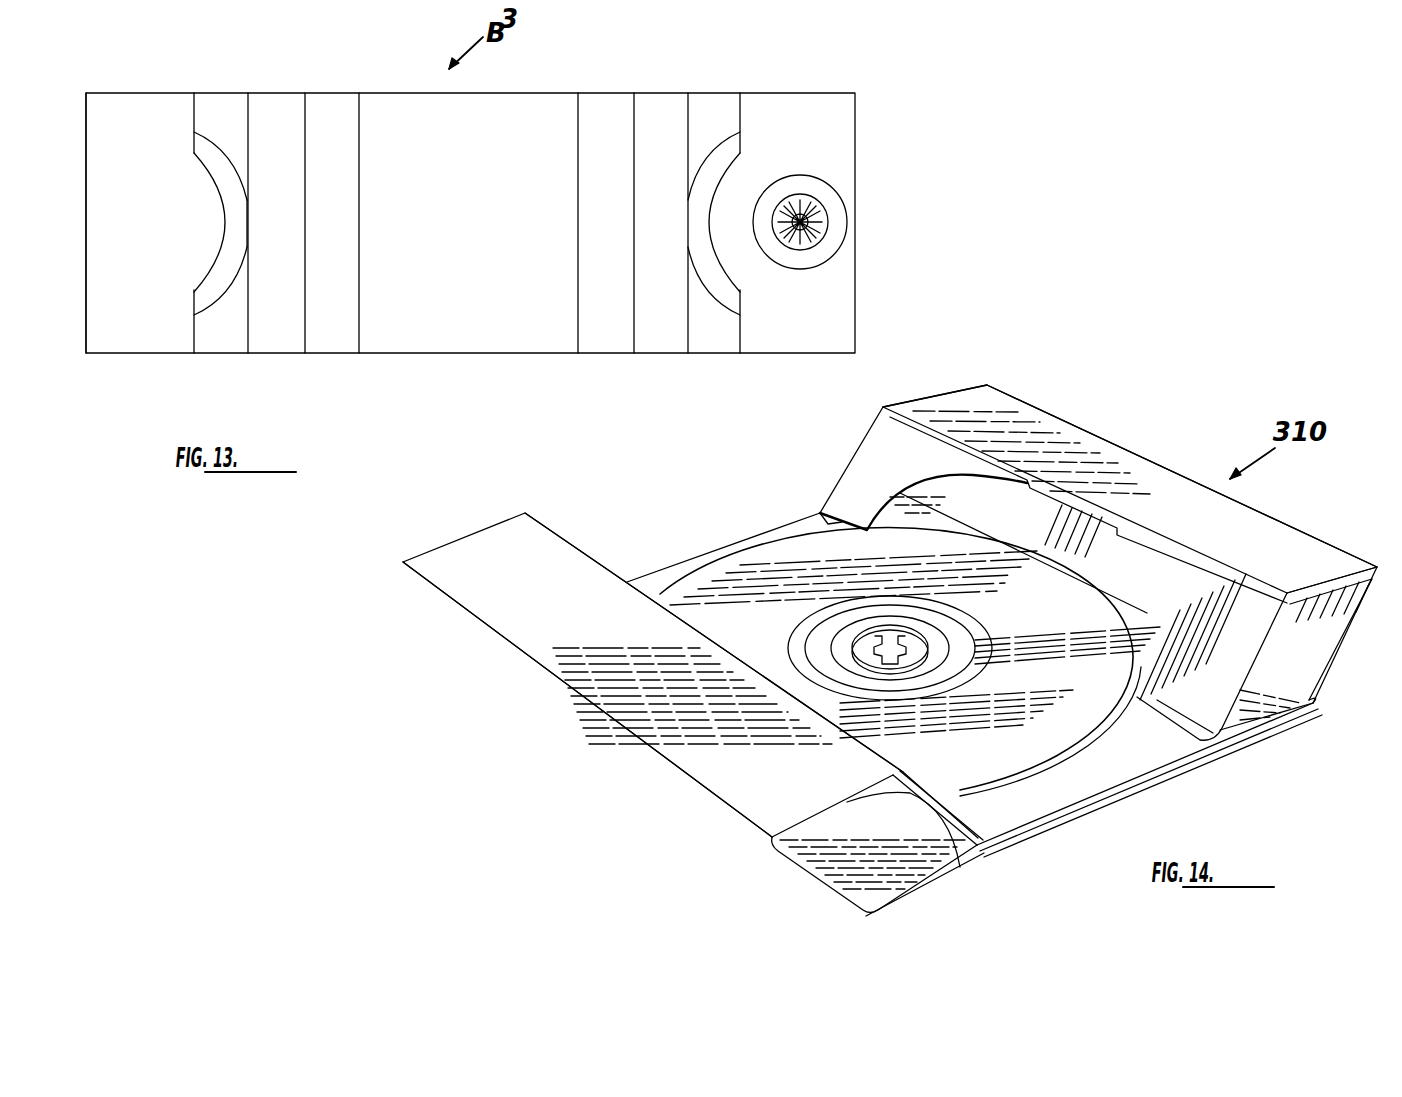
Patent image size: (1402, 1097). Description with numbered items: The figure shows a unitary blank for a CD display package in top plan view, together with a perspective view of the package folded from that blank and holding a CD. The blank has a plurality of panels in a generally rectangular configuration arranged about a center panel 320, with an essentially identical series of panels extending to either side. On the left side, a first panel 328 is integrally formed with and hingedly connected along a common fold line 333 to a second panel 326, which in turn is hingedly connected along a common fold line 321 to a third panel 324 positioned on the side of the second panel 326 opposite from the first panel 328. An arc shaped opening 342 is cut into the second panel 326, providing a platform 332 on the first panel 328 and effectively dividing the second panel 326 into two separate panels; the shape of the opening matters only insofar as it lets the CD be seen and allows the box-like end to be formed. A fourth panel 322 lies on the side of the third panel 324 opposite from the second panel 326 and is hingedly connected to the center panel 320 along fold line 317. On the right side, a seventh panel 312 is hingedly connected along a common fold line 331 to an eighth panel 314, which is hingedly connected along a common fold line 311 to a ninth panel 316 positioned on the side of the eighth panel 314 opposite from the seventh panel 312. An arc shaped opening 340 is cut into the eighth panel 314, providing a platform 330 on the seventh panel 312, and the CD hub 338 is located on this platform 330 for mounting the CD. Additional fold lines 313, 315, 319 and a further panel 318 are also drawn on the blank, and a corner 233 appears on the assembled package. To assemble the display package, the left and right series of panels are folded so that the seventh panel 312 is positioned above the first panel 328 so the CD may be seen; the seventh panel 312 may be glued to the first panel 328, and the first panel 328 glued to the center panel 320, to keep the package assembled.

In FIG. 13, the fold line 311 is at (688, 322).
In FIG. 14, the fold line 311 is at (575, 547).
In FIG. 13, the seventh panel 312 is at (778, 131).
In FIG. 14, the seventh panel 312 is at (1093, 780).
In FIG. 13, the fold line 313 is at (634, 322).
In FIG. 14, the fold line 313 is at (670, 768).
In FIG. 13, the eighth panel 314 is at (694, 131).
In FIG. 14, the eighth panel 314 is at (910, 793).
In FIG. 13, the fold line 315 is at (578, 322).
In FIG. 13, the ninth panel 316 is at (639, 131).
In FIG. 14, the ninth panel 316 is at (504, 603).
In FIG. 13, the fold line 317 is at (359, 322).
In FIG. 14, the fold line 317 is at (1293, 680).
In FIG. 13, the panel 318 is at (583, 131).
In FIG. 13, the fold line 319 is at (305, 322).
In FIG. 14, the fold line 319 is at (1127, 446).
In FIG. 13, the center panel 320 is at (445, 131).
In FIG. 14, the center panel 320 is at (877, 865).
In FIG. 13, the fold line 321 is at (248, 322).
In FIG. 14, the fold line 321 is at (907, 428).
In FIG. 13, the fourth panel 322 is at (312, 131).
In FIG. 14, the fourth panel 322 is at (1337, 608).
In FIG. 13, the third panel 324 is at (257, 131).
In FIG. 14, the third panel 324 is at (1209, 541).
In FIG. 13, the second panel 326 is at (199, 131).
In FIG. 14, the second panel 326 is at (875, 471).
In FIG. 13, the first panel 328 is at (119, 131).
In FIG. 13, the platform 330 is at (732, 250).
In FIG. 13, the fold line 331 is at (740, 108).
In FIG. 13, the platform 332 is at (213, 218).
In FIG. 13, the fold line 333 is at (194, 110).
In FIG. 14, the fold line 333 is at (833, 510).
In FIG. 13, the CD hub 338 is at (808, 177).
In FIG. 13, the arc shaped opening 340 is at (697, 224).
In FIG. 13, the arc shaped opening 342 is at (238, 222).
In FIG. 14, the corner 233 is at (1200, 747).